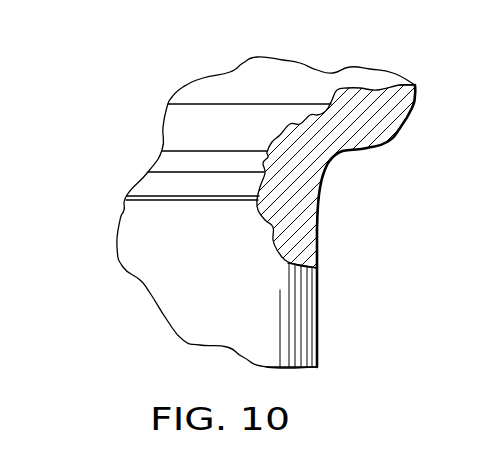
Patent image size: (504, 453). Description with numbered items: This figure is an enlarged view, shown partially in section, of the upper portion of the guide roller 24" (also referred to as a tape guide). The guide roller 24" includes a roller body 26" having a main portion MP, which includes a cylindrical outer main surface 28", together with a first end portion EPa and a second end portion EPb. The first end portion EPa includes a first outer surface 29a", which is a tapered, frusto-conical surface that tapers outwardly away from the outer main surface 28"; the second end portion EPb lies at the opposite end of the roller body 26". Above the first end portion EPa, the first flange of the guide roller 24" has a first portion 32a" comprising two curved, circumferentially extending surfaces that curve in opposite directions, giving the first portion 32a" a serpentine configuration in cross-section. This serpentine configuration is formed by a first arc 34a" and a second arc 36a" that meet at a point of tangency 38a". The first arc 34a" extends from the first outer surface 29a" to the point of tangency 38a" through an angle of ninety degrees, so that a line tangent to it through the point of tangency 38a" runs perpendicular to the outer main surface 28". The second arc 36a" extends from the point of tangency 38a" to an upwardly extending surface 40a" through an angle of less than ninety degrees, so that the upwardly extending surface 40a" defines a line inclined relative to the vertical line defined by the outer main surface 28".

The guide roller 24 is at (337, 52).
The upwardly extending surface 40a is at (419, 98).
The second arc 36a is at (400, 133).
The point of tangency 38a is at (336, 158).
The first portion 32a is at (343, 164).
The first arc 34a is at (334, 168).
The first outer surface 29a is at (323, 188).
The outer main surface 28 is at (321, 250).
The roller body 26 is at (329, 330).
The main portion MP is at (329, 350).
The first end portion EPa is at (123, 180).
The second end portion EPb is at (465, 452).